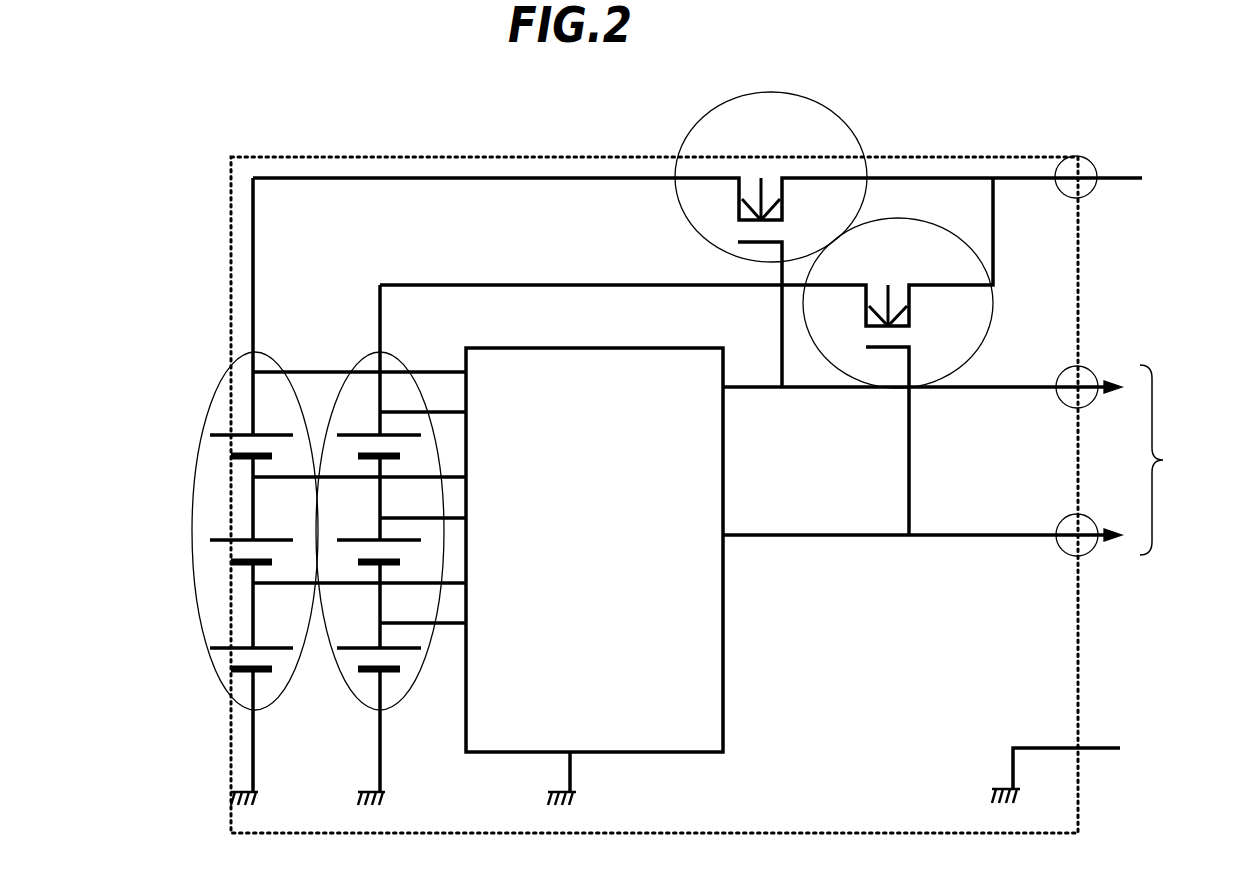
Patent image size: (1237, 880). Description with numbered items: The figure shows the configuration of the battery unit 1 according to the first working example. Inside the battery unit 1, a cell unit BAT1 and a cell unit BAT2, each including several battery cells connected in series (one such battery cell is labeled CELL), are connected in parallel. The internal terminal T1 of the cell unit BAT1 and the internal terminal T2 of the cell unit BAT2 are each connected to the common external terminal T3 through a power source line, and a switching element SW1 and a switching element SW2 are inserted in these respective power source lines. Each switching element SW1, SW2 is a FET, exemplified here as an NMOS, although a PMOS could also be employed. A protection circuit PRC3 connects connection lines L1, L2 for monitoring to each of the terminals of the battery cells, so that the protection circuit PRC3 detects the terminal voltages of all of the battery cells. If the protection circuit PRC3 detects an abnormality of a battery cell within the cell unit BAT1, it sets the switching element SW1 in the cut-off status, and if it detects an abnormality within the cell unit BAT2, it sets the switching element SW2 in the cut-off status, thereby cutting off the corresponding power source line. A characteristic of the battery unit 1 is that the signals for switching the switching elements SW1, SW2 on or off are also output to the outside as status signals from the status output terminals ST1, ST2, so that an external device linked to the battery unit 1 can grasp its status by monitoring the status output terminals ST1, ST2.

The battery unit 1 is at (384, 157).
The internal terminal T1 is at (253, 256).
The internal terminal T2 is at (502, 285).
The external terminal T3 is at (1097, 162).
The switching element SW1 is at (785, 92).
The switching element SW2 is at (962, 240).
The status output terminal ST1 is at (1092, 368).
The status output terminal ST2 is at (1088, 556).
The connection line L1 is at (337, 370).
The connection line L2 is at (433, 412).
The cell unit BAT1 is at (202, 423).
The cell unit BAT2 is at (355, 703).
The battery cell CELL is at (232, 548).
The protection circuit PRC3 is at (723, 662).